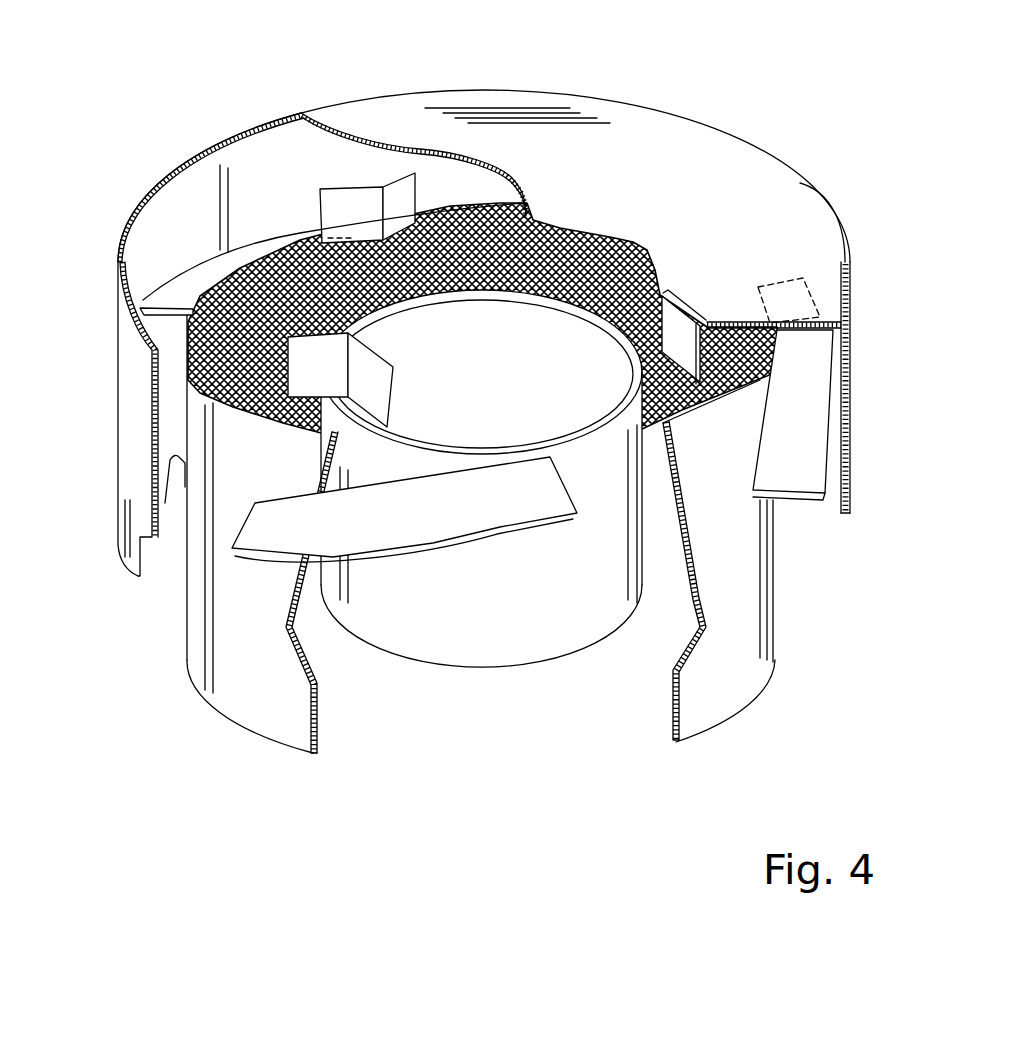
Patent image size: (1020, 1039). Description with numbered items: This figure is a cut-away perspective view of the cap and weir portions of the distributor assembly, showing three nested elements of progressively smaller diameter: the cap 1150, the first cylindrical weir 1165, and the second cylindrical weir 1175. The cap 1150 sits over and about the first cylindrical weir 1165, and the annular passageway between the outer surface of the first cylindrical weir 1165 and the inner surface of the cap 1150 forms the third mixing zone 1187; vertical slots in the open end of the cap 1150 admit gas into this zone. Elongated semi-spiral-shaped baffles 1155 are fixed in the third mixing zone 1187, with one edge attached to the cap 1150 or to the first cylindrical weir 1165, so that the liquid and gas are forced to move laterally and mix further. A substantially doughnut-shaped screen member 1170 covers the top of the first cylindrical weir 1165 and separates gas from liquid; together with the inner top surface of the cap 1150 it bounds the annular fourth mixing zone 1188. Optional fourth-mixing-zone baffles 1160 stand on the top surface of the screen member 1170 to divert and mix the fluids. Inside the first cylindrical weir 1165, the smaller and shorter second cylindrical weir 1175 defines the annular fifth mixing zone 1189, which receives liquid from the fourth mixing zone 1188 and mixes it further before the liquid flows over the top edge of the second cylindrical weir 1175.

The cap 1150 is at (737, 173).
The semi-spiral-shaped baffles 1155 is at (520, 514).
The fourth-mixing-zone baffles 1160 is at (378, 226).
The first cylindrical weir 1165 is at (263, 723).
The substantially doughnut-shaped screen member 1170 is at (268, 338).
The second cylindrical weir 1175 is at (528, 627).
The third mixing zone 1187 is at (175, 410).
The fourth mixing zone 1188 is at (453, 177).
The fifth mixing zone 1189 is at (667, 507).